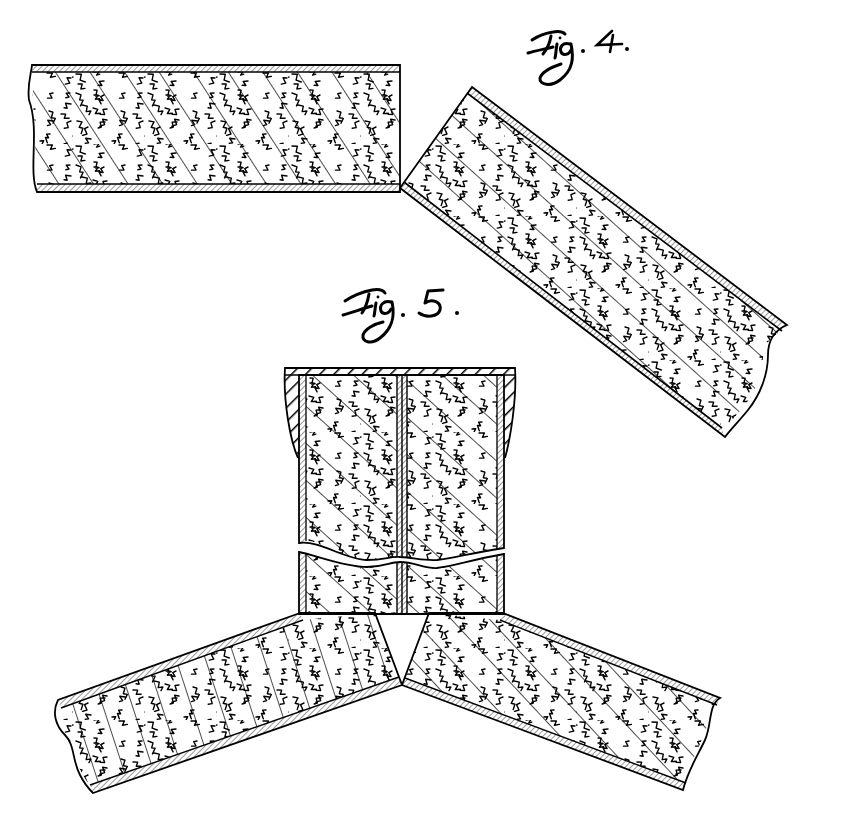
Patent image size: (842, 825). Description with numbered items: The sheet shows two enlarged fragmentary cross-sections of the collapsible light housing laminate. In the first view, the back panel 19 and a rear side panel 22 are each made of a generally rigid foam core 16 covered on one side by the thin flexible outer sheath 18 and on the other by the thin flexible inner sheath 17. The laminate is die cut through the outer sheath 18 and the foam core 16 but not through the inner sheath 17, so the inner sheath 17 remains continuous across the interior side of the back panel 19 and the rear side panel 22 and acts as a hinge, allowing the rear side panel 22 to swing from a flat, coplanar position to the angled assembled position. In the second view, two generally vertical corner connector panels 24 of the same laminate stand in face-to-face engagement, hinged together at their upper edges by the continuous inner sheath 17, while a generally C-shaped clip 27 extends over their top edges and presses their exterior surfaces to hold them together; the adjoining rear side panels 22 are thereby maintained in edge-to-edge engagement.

In FIG. 4, the foam core 16 is at (357, 97).
In FIG. 4, the inner sheath 17 is at (330, 193).
In FIG. 5, the inner sheath 17 is at (420, 517).
In FIG. 4, the outer sheath 18 is at (307, 65).
In FIG. 5, the outer sheath 18 is at (299, 470).
In FIG. 4, the back panel 19 is at (225, 66).
In FIG. 4, the rear side panel 22 is at (672, 231).
In FIG. 5, the rear side panel 22 is at (190, 644).
In FIG. 5, the corner connector panel 24 is at (510, 516).
In FIG. 5, the C-shaped clip 27 is at (435, 370).